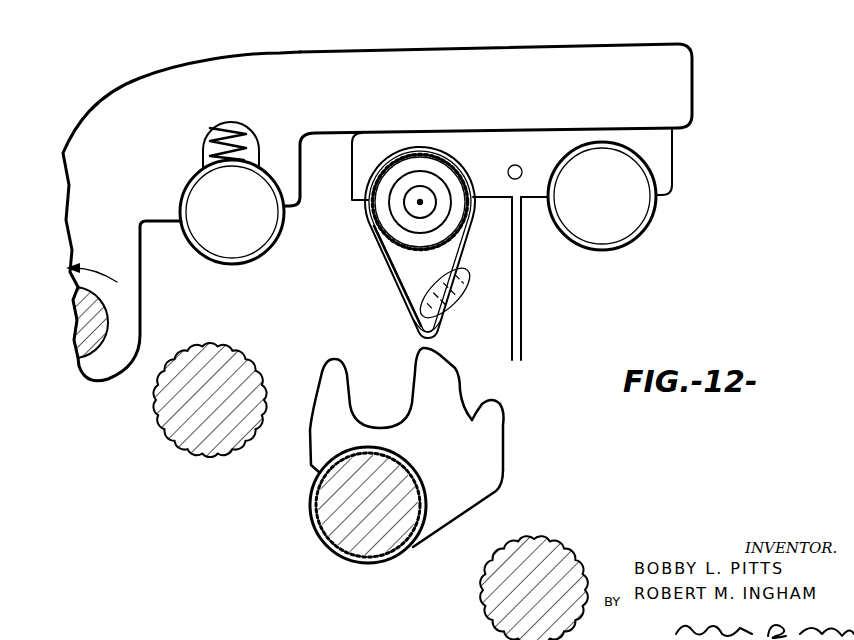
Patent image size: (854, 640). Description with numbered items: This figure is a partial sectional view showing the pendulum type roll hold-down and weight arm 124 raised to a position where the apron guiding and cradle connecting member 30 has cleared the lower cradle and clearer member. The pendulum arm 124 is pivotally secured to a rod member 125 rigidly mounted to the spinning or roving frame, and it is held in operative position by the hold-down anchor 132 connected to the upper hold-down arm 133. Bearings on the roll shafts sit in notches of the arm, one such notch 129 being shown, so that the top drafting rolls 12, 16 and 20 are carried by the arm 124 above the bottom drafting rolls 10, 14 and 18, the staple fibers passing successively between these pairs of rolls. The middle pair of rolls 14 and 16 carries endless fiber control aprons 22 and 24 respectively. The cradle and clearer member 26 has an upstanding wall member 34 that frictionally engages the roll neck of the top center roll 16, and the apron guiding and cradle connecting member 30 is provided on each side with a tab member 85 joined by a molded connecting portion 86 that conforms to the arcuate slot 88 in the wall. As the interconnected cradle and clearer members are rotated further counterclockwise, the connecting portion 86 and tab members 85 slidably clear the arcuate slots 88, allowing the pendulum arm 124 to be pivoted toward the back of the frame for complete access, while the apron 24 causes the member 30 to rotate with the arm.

The pendulum type roll hold-down and weight arm 124 is at (138, 82).
The upper hold-down arm 133 is at (355, 50).
The notch 129 is at (254, 136).
The drafting roll 12 is at (197, 250).
The rod member 125 is at (114, 326).
The drafting roll 10 is at (223, 348).
The top center roll 16 is at (384, 220).
The endless fiber control apron 24 is at (388, 264).
The apron guiding and cradle connecting member 30 is at (455, 255).
The molded connecting portion 86 is at (466, 284).
The tab member 85 is at (442, 322).
The hold-down anchor 132 is at (522, 320).
The drafting roll 20 is at (656, 208).
The arcuate slot 88 is at (476, 426).
The cradle and clearer member 26 is at (306, 455).
The drafting roll 14 is at (318, 520).
The endless fiber control apron 22 is at (372, 564).
The upstanding wall member 34 is at (478, 510).
The drafting roll 18 is at (583, 562).